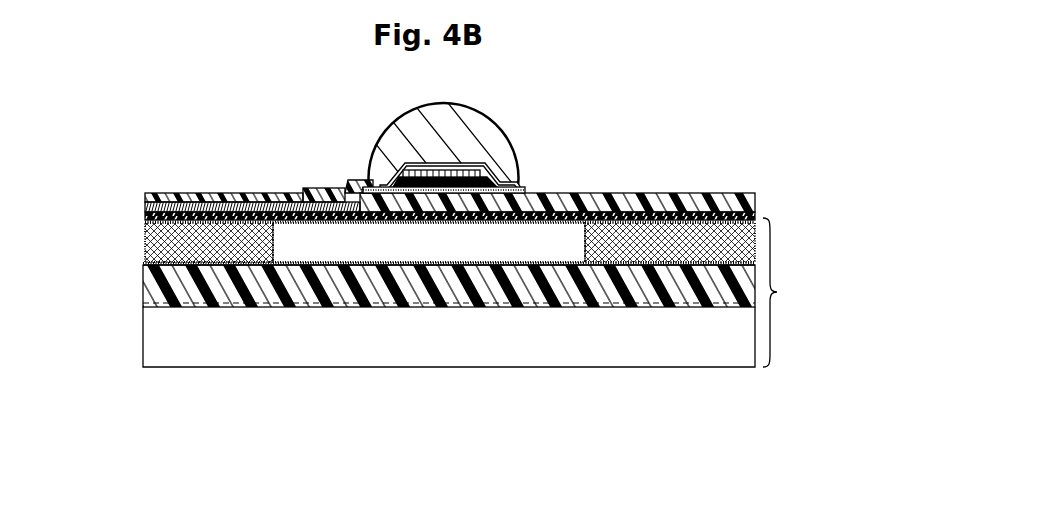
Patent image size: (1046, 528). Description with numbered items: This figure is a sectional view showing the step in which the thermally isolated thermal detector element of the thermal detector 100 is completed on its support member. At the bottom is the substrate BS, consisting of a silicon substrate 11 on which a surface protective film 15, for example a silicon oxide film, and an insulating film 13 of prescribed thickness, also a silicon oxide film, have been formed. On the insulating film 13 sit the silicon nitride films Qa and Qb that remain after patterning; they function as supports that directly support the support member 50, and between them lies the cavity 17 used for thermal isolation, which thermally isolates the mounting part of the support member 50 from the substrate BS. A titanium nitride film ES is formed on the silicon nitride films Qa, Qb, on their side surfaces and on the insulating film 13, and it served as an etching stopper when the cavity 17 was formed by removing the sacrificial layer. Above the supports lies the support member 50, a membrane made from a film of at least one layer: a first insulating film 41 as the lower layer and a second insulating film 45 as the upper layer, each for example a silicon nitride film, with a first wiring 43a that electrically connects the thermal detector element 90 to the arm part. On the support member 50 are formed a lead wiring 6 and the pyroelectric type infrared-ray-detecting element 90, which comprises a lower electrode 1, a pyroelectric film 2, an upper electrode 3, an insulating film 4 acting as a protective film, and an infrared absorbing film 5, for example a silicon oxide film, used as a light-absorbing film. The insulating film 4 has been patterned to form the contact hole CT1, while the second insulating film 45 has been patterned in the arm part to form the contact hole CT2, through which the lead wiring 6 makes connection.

The thermal detector 100 is at (423, 121).
The thermal detector element 90 is at (494, 117).
The infrared absorbing film 5 is at (487, 132).
The insulating film (protective film) 4 is at (465, 161).
The upper electrode 3 is at (470, 172).
The pyroelectric film 2 is at (497, 181).
The lower electrode 1 is at (527, 190).
The lead wiring 6 is at (348, 183).
The contact hole CT1 is at (358, 181).
The contact hole CT2 is at (297, 195).
The support member (membrane) 50 is at (433, 204).
The second insulating film 45 is at (438, 182).
The first wiring 43a is at (145, 205).
The first insulating film 41 is at (145, 217).
The insulating film 13 is at (733, 283).
The surface protective film 15 is at (143, 300).
The titanium nitride film ES is at (322, 278).
The cavity (recess part) 17 is at (427, 237).
The silicon nitride film Qa is at (240, 243).
The silicon nitride film Qb is at (623, 255).
The silicon substrate 11 is at (177, 342).
The substrate BS is at (808, 292).